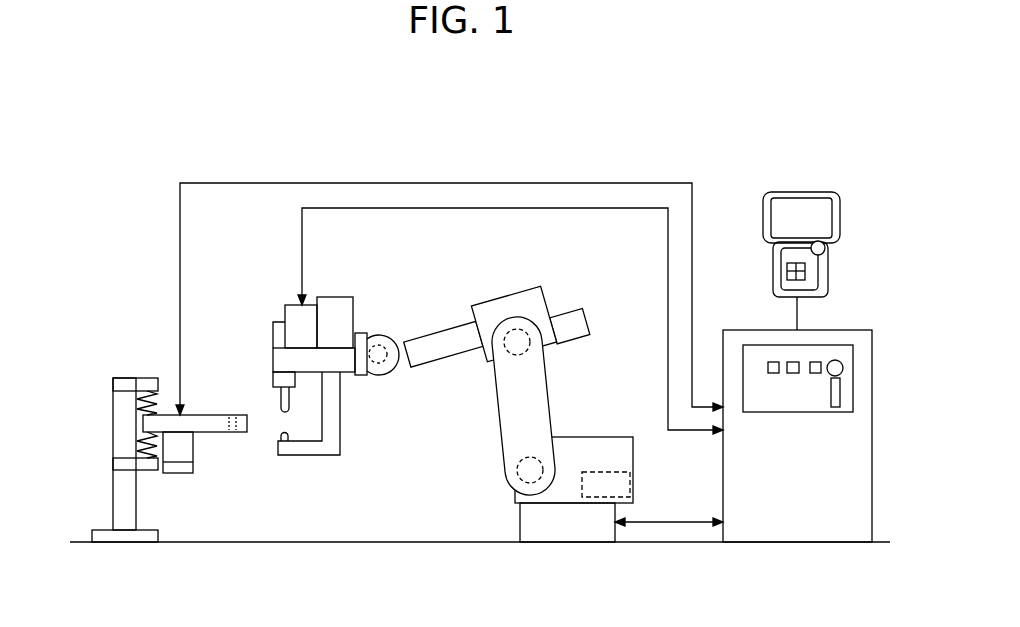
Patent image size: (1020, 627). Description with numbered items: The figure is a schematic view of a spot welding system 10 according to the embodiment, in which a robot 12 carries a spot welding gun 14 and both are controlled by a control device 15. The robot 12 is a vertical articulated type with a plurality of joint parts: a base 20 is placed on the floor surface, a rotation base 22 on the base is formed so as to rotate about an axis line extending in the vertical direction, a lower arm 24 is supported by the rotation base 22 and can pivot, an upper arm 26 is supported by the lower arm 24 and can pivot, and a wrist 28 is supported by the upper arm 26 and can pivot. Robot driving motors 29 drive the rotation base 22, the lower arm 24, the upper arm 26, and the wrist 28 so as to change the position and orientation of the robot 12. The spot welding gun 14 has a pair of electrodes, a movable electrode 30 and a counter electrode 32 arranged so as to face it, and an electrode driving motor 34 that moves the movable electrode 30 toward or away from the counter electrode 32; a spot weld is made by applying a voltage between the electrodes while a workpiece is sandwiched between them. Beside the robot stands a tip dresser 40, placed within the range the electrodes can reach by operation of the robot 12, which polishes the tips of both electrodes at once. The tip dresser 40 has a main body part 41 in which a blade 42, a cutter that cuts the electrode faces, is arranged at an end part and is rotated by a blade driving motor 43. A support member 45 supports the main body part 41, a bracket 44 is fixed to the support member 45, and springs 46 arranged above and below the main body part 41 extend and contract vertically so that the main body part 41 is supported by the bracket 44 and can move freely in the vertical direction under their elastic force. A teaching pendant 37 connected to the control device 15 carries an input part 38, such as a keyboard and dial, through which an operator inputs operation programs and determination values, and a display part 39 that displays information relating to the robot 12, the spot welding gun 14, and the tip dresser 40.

The spot welding system 10 is at (624, 142).
The robot 12 is at (501, 400).
The spot welding gun 14 is at (349, 436).
The control device 15 is at (872, 373).
The base 20 is at (518, 512).
The rotation base 22 is at (618, 452).
The lower arm 24 is at (533, 397).
The upper arm 26 is at (430, 345).
The wrist 28 is at (380, 334).
The robot driving motors 29 is at (577, 313).
The movable electrode 30 is at (291, 339).
The counter electrode 32 is at (280, 438).
The electrode driving motor 34 is at (292, 312).
The teaching pendant 37 is at (766, 266).
The input part 38 is at (806, 269).
The display part 39 is at (818, 215).
The tip dresser 40 is at (132, 425).
The main body part 41 is at (202, 415).
The blade 42 is at (232, 417).
The blade driving motor 43 is at (190, 460).
The bracket 44 is at (137, 378).
The support member 45 is at (113, 497).
The springs 46 is at (145, 398).